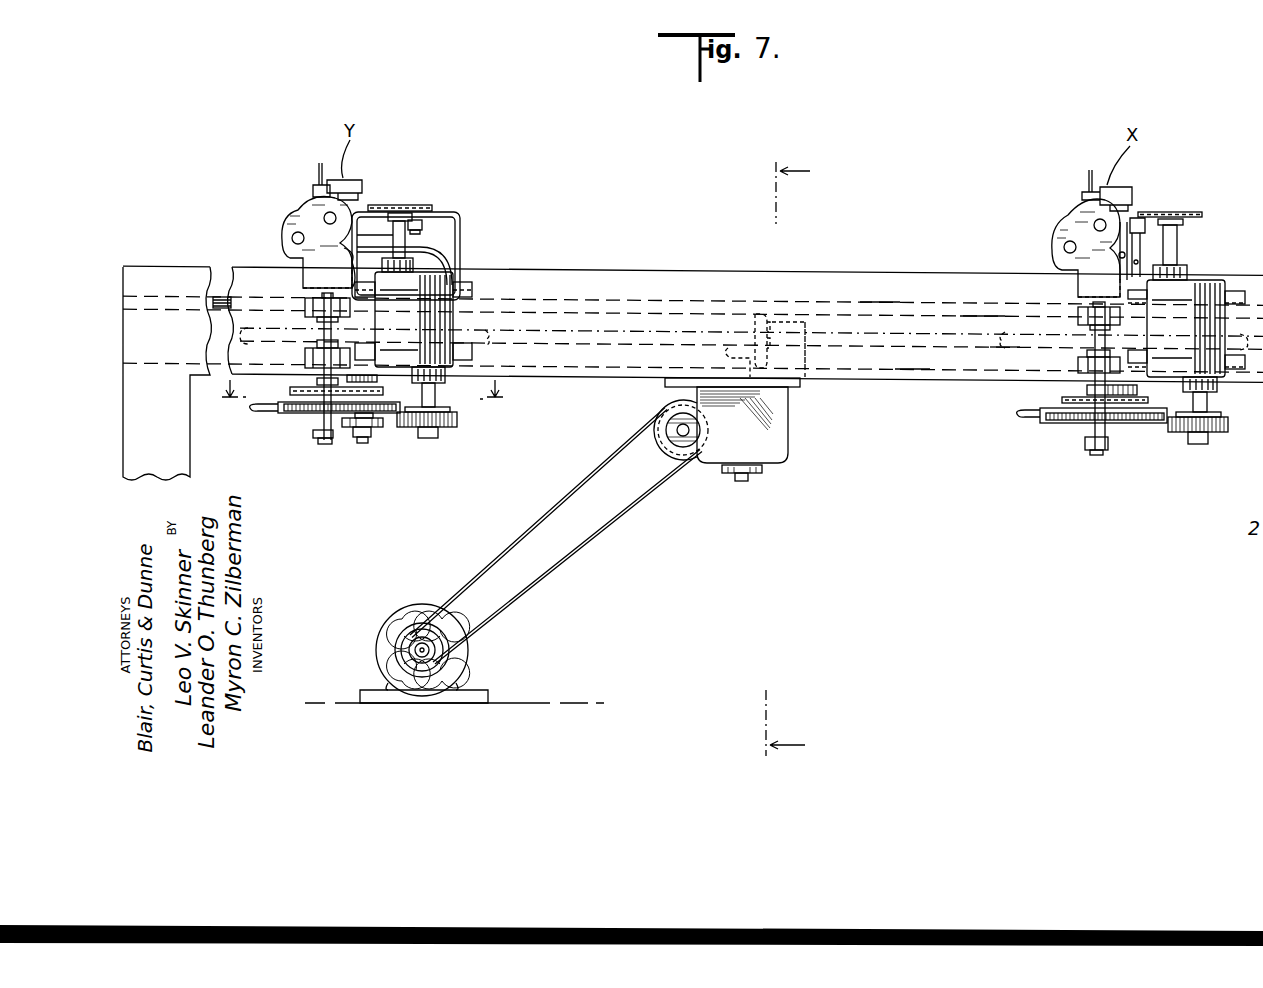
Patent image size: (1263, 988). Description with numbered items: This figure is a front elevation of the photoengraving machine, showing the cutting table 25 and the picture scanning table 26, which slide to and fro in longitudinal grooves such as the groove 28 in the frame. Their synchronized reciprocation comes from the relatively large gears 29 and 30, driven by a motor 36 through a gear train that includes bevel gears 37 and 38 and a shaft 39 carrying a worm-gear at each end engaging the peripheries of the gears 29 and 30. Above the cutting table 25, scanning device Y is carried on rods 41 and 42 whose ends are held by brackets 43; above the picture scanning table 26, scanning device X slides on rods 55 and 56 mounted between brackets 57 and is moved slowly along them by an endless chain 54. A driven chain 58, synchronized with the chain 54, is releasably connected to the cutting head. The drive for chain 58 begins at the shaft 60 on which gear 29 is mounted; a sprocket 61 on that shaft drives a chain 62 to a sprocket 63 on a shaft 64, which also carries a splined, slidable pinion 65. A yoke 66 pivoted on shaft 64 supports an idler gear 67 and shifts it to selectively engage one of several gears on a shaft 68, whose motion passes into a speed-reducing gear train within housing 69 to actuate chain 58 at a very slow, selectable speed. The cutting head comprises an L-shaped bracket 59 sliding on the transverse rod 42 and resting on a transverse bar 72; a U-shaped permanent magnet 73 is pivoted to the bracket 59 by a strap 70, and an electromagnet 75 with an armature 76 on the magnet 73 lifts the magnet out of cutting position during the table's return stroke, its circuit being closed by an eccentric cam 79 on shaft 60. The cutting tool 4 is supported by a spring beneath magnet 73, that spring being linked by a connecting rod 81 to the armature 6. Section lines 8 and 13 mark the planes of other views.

The cutting tool 4 is at (378, 292).
The armature 6 is at (344, 258).
The section line 8- 8 is at (785, 464).
The section line 13- 13 is at (360, 395).
The cutting table 25 is at (222, 296).
The picture scanning table 26 is at (986, 314).
The longitudinally extending groove 28 is at (880, 300).
The gear 29 is at (240, 341).
The gear 30 is at (1003, 346).
The motor 36 is at (385, 636).
The bevel gear 37 is at (730, 352).
The bevel gear 38 is at (756, 314).
The shaft 39 is at (912, 344).
The rod 41 is at (292, 238).
The rod 42 is at (324, 215).
The bracket 43 is at (310, 228).
The endless chain 54 is at (1205, 213).
The rod 55 is at (1066, 247).
The rod 56 is at (1095, 222).
The bracket 57 is at (1086, 236).
The driven chain 58 is at (416, 206).
The bracket 59 is at (462, 225).
The shaft 60 is at (366, 443).
The sprocket 61 is at (372, 382).
The chain 62 is at (300, 391).
The sprocket 63 is at (318, 388).
The shaft 64 is at (320, 426).
The pinion 65 is at (338, 432).
The yoke 66 is at (280, 412).
The idler gear 67 is at (386, 408).
The shaft 68 is at (434, 436).
The housing 69 is at (432, 352).
The strap 70 is at (356, 235).
The transverse bar 72 is at (456, 284).
The permanent magnet 73 is at (450, 246).
The electromagnet 75 is at (423, 220).
The armature 76 is at (422, 229).
The eccentric cam 79 is at (382, 428).
The connecting rod 81 is at (348, 274).